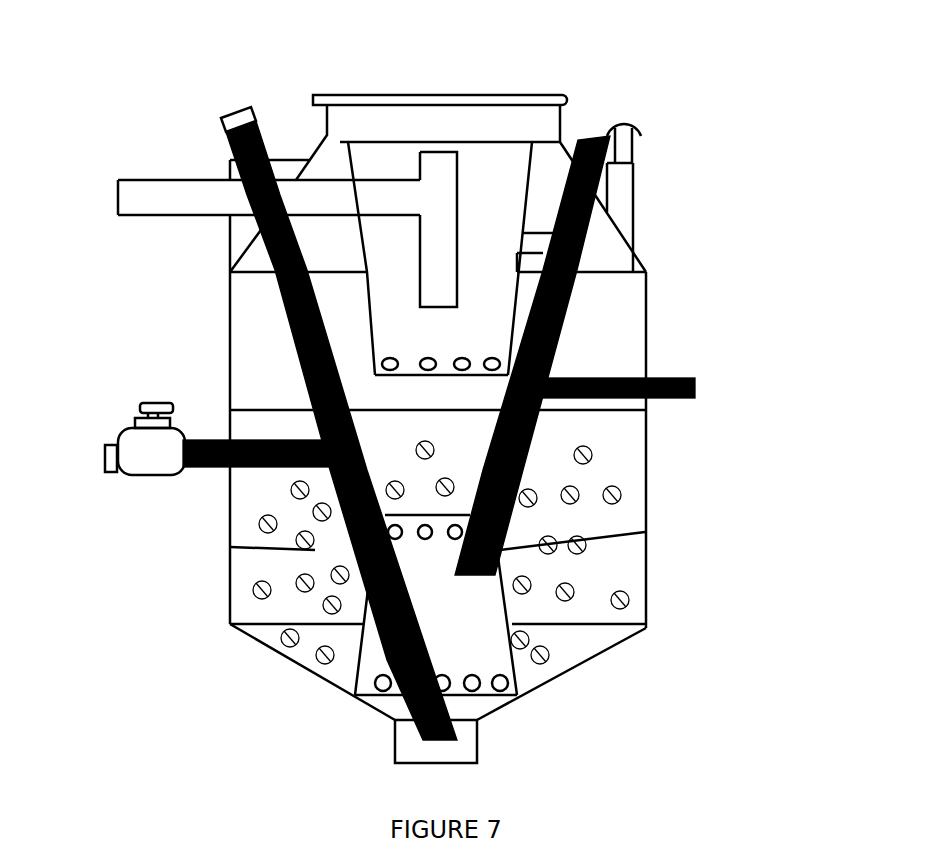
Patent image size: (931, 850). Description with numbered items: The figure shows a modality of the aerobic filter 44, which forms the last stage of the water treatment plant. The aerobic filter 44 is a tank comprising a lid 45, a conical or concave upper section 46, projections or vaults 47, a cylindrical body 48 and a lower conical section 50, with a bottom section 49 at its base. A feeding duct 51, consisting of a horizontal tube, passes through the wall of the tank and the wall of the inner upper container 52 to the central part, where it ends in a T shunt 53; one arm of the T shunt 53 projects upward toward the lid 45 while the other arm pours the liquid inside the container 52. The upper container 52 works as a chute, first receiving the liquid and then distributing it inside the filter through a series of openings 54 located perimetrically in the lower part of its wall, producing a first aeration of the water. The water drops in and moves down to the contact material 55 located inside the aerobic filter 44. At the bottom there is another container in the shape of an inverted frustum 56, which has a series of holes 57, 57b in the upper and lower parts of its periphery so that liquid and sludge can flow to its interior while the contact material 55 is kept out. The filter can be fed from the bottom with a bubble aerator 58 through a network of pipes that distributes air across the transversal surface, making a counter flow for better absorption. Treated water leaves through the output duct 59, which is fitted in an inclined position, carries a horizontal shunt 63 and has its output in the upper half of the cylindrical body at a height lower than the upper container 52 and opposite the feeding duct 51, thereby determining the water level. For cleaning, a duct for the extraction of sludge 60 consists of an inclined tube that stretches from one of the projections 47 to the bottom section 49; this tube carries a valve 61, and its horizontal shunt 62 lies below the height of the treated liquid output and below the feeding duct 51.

The aerobic filter 44 is at (630, 293).
The lid 45 is at (457, 93).
The conical or concave upper section 46 is at (306, 152).
The projections or vaults 47 is at (636, 142).
The cylindrical body 48 is at (224, 335).
The bottom section 49 is at (300, 668).
The lower conical section 50 is at (391, 742).
The feeding duct 51 is at (106, 200).
The inner upper container 52 is at (355, 292).
The T shunt 53 is at (405, 177).
The openings 54 is at (370, 367).
The contact material 55 is at (647, 604).
The inverted frustum container 56 is at (350, 593).
The holes 57 is at (516, 685).
The holes 57b is at (500, 550).
The bubble aerator 58 is at (594, 542).
The output duct 59 is at (612, 373).
The duct for the extraction of sludge 60 is at (378, 637).
The valve 61 is at (113, 478).
The horizontal shunt 62 is at (258, 468).
The horizontal shunt 63 is at (678, 402).